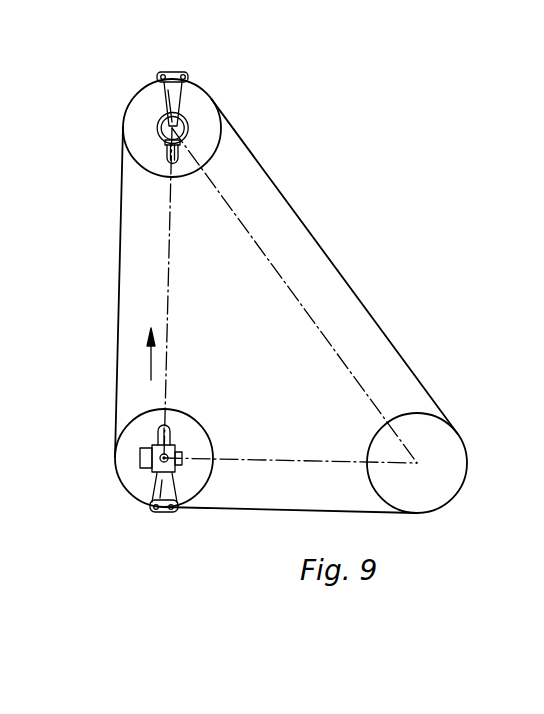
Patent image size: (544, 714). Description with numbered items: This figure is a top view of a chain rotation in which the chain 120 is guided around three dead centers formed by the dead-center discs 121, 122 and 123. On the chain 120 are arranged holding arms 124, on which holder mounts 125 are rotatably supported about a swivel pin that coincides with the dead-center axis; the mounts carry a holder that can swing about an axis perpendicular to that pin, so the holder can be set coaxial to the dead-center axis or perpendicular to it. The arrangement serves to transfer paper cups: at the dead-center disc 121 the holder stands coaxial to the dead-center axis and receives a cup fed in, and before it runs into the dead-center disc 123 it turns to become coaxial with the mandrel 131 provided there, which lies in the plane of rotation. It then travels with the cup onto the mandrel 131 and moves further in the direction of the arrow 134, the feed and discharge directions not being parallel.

The chain 120 is at (338, 270).
The dead-center disc 121 is at (210, 115).
The dead-center disc 122 is at (437, 443).
The dead-center disc 123 is at (138, 490).
The holding arm 124 is at (169, 103).
The holder mount 125 is at (180, 157).
The mandrel 131 is at (142, 458).
The arrow 134 is at (148, 368).